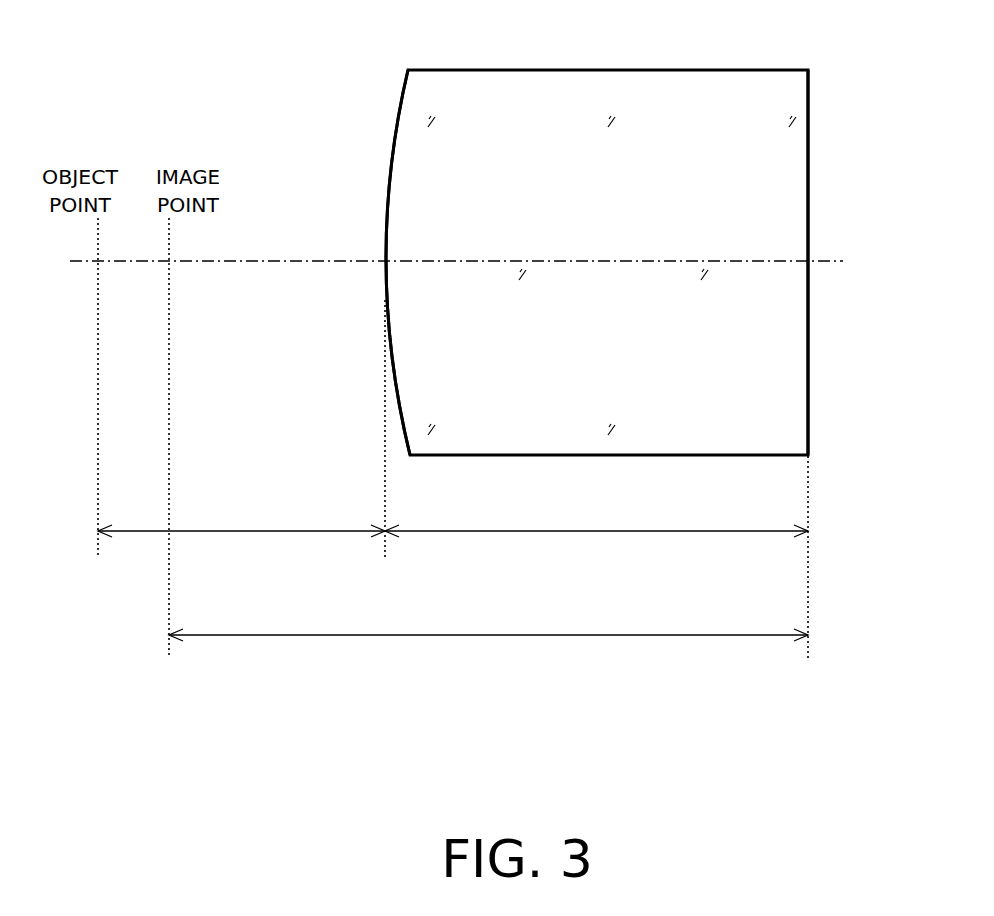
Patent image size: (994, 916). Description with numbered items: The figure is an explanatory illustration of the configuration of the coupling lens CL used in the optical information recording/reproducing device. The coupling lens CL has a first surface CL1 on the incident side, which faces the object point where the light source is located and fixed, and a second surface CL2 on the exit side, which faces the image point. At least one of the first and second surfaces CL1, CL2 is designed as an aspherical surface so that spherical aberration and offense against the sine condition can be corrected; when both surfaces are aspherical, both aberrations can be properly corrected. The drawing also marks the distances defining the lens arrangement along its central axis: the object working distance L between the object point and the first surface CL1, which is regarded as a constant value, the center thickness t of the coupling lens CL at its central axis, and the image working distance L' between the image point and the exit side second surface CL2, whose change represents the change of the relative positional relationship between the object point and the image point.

The coupling lens CL is at (585, 85).
The first surface CL1 is at (388, 187).
The second surface CL2 is at (810, 160).
The object working distance L is at (241, 518).
The center thickness t is at (596, 518).
The image working distance L' is at (488, 623).